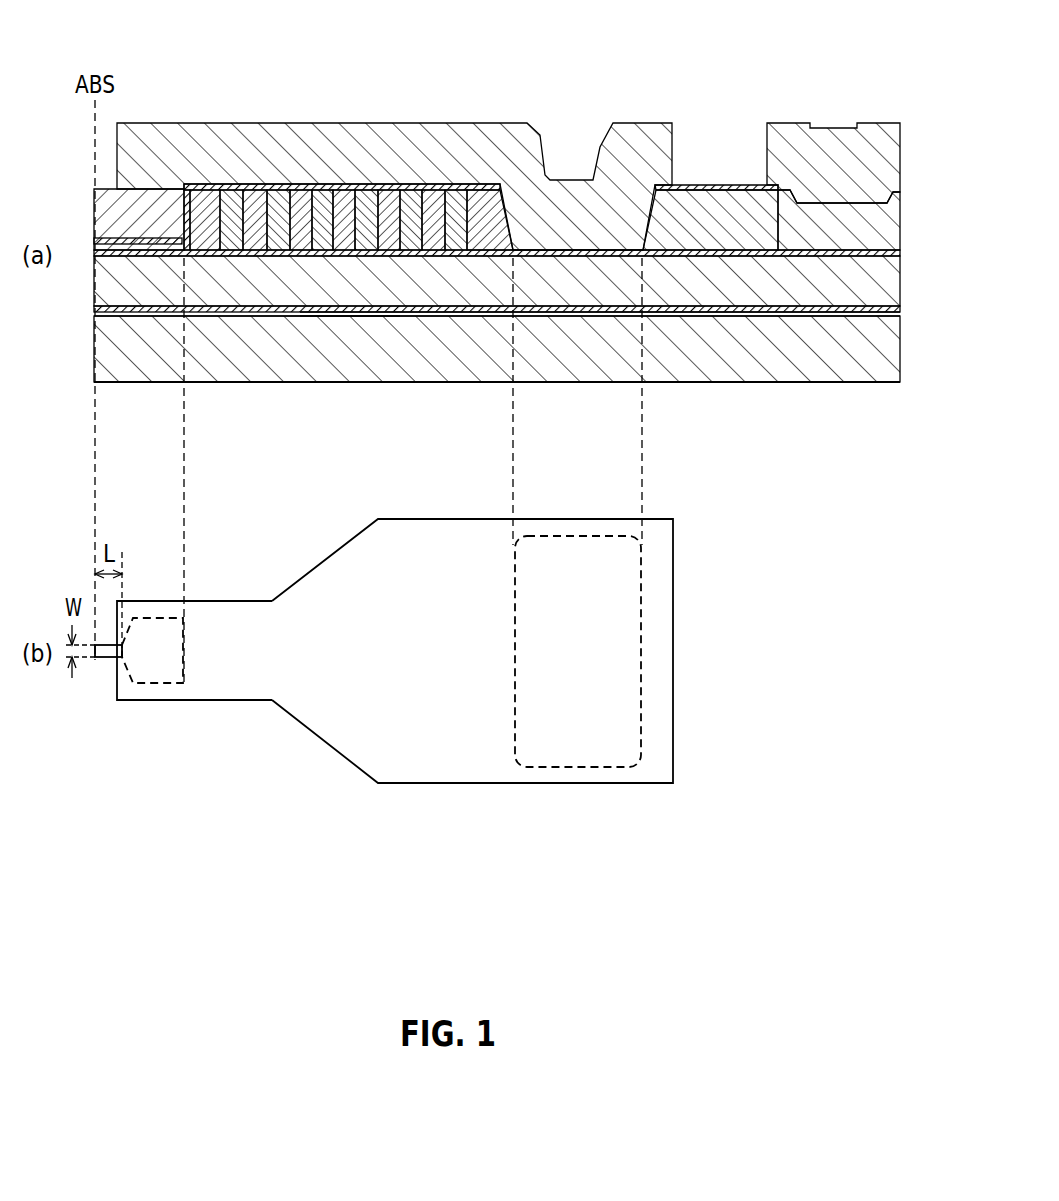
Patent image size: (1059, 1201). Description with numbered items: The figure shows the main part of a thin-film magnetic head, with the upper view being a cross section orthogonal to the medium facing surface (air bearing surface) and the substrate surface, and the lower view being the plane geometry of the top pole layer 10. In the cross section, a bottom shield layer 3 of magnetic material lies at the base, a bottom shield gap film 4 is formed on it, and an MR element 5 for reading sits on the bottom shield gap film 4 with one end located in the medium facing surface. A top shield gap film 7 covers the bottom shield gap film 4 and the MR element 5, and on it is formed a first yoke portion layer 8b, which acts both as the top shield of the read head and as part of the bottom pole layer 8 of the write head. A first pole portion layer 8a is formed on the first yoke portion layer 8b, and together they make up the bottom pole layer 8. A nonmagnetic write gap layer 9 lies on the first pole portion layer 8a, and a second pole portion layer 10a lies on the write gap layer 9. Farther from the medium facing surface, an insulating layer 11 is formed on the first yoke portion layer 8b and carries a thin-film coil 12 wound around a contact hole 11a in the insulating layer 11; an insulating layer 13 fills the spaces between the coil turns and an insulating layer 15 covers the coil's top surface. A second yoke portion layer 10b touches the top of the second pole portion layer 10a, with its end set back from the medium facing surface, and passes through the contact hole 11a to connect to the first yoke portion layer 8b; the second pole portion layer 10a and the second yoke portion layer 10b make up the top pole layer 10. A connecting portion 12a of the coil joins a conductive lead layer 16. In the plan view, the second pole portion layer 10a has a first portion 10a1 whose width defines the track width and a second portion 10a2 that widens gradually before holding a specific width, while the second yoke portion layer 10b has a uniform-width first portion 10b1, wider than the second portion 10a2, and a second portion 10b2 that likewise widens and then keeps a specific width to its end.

The bottom shield layer 3 is at (322, 373).
The bottom shield gap film 4 is at (372, 316).
The MR element 5 is at (95, 312).
The top shield gap film 7 is at (403, 312).
The bottom pole layer 8 is at (252, 309).
The first pole portion layer 8a is at (147, 254).
The first yoke portion layer 8b is at (208, 295).
The write gap layer 9 is at (122, 244).
The top pole layer 10 is at (233, 120).
The second pole portion layer 10a is at (140, 195).
The first portion 10a1 is at (104, 660).
The second portion 10a2 is at (152, 688).
The second yoke portion layer 10b is at (183, 128).
The first portion 10b1 is at (232, 705).
The second portion 10b2 is at (428, 786).
The insulating layer 11 is at (252, 222).
The contact hole 11a is at (568, 248).
The thin-film coil 12 is at (408, 193).
The connecting portion 12a is at (837, 205).
The insulating layer 13 is at (475, 180).
The insulating layer 15 is at (303, 183).
The lead layer 16 is at (793, 133).